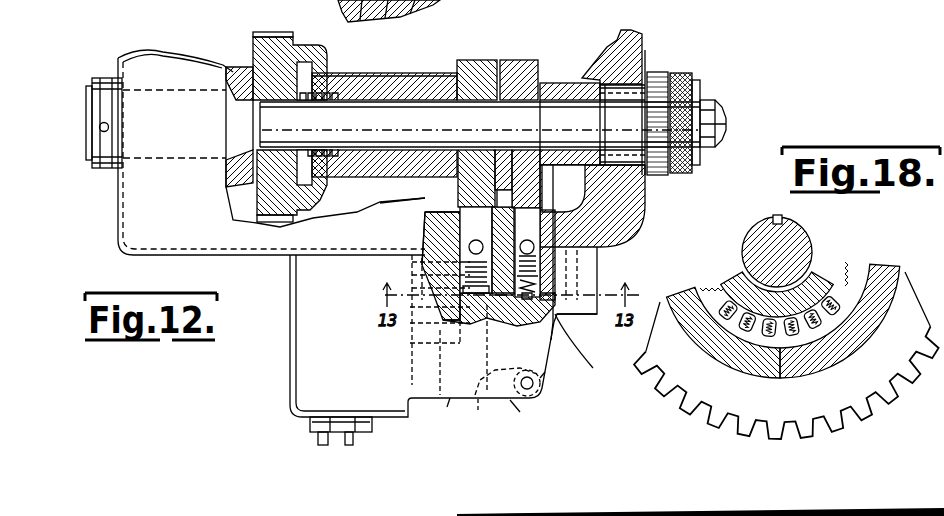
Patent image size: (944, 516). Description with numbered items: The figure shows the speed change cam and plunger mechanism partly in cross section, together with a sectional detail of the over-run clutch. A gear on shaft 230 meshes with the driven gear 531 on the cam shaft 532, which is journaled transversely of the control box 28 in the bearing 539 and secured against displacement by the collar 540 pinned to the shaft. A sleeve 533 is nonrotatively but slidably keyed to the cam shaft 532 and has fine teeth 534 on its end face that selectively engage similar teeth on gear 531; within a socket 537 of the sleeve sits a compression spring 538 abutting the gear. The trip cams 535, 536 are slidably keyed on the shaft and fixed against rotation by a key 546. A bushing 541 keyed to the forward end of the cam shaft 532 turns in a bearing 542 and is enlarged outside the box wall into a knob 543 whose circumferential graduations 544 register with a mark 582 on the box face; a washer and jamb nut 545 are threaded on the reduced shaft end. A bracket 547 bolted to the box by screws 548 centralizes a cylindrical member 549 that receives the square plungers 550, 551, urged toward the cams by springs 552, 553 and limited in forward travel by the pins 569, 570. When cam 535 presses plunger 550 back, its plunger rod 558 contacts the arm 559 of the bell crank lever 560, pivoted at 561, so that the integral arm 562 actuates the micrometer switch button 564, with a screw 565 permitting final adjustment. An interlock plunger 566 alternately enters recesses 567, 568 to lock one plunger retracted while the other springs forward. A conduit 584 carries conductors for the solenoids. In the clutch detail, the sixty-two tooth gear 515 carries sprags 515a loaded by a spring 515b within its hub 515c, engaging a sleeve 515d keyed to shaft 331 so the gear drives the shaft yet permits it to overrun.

In FIG. 12, the control box 28 is at (68, 256).
In FIG. 12, the shaft 230 is at (436, 8).
In FIG. 18, the shaft 331 is at (842, 262).
In FIG. 18, the sixty-two tooth gear 515 is at (790, 404).
In FIG. 18, the sprags 515a is at (830, 276).
In FIG. 18, the spring 515b is at (855, 268).
In FIG. 18, the hub 515c is at (692, 295).
In FIG. 18, the sleeve 515d is at (738, 262).
In FIG. 12, the driven gear 531 is at (253, 52).
In FIG. 12, the cam shaft 532 is at (405, 178).
In FIG. 12, the sleeve 533 is at (412, 73).
In FIG. 12, the teeth 534 is at (303, 62).
In FIG. 12, the trip cam 535 is at (477, 60).
In FIG. 12, the trip cam 536 is at (530, 60).
In FIG. 12, the socket 537 is at (368, 72).
In FIG. 12, the compression spring 538 is at (336, 72).
In FIG. 12, the bearing 539 is at (226, 180).
In FIG. 12, the collar 540 is at (100, 178).
In FIG. 12, the bushing 541 is at (561, 80).
In FIG. 12, the bearing 542 is at (647, 206).
In FIG. 12, the knob 543 is at (682, 175).
In FIG. 12, the circumferential graduations 544 is at (656, 72).
In FIG. 12, the jamb nut 545 is at (713, 101).
In FIG. 12, the key 546 is at (409, 222).
In FIG. 12, the bracket 547 is at (290, 380).
In FIG. 12, the screws 548 is at (578, 316).
In FIG. 12, the cylindrical member 549 is at (554, 333).
In FIG. 12, the square plunger 550 is at (462, 212).
In FIG. 12, the square plunger 551 is at (563, 188).
In FIG. 12, the spring 552 is at (455, 350).
In FIG. 12, the spring 553 is at (530, 282).
In FIG. 12, the plunger rod 558 is at (450, 398).
In FIG. 12, the lever arm 559 is at (478, 410).
In FIG. 12, the bell crank lever 560 is at (520, 412).
In FIG. 12, the pivot 561 is at (538, 395).
In FIG. 12, the lever arm 562 is at (545, 372).
In FIG. 12, the micrometer switch button 564 is at (507, 378).
In FIG. 12, the screw 565 is at (591, 348).
In FIG. 12, the interlock plunger 566 is at (503, 242).
In FIG. 12, the recess 567 is at (476, 250).
In FIG. 12, the recess 568 is at (527, 253).
In FIG. 12, the pin 569 is at (521, 243).
In FIG. 12, the pin 570 is at (469, 247).
In FIG. 12, the mark 582 is at (645, 55).
In FIG. 12, the conduit 584 is at (312, 430).